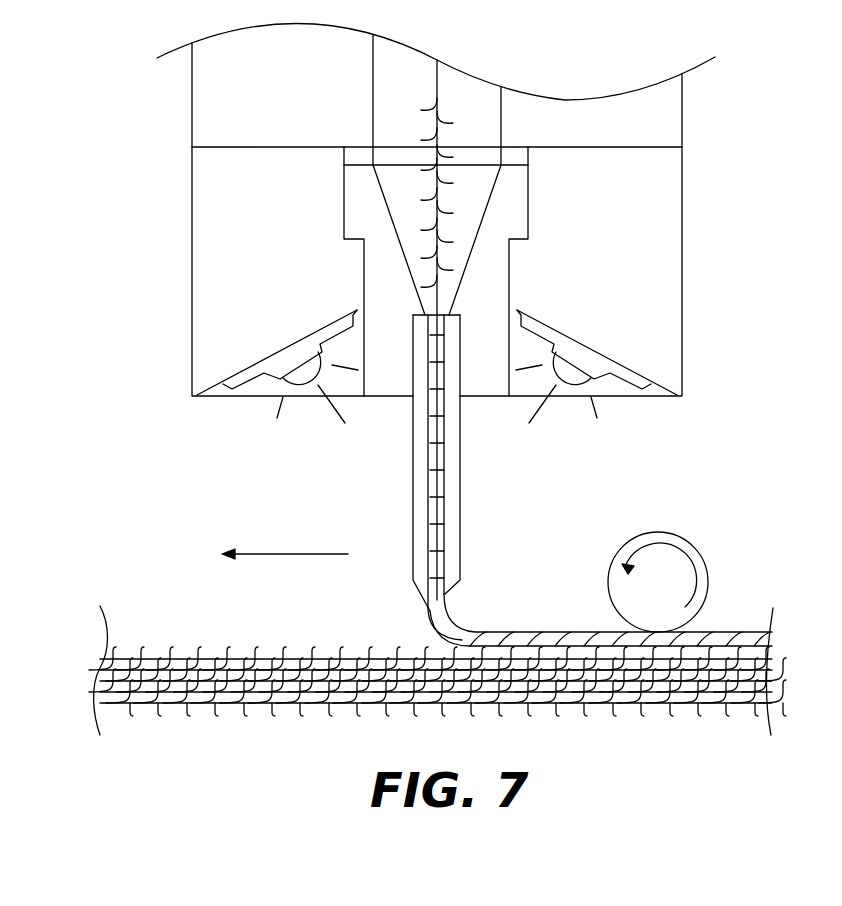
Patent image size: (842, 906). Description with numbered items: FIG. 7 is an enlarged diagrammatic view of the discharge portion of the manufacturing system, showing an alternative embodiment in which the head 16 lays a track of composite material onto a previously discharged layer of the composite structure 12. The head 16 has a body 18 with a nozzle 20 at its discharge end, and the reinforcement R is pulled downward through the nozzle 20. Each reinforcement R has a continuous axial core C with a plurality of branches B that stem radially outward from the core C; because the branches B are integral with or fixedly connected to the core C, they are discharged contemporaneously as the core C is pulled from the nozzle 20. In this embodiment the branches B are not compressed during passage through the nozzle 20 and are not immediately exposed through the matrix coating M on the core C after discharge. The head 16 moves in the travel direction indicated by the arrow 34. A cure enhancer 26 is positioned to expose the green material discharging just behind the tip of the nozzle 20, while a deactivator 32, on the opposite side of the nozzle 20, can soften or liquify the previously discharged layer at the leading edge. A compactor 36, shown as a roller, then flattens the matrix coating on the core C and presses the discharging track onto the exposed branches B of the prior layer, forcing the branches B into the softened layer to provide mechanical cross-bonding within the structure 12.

The composite structure 12 is at (690, 700).
The head 16 is at (484, 209).
The body 18 is at (649, 303).
The nozzle 20 is at (453, 488).
The cure enhancer 26 is at (582, 378).
The deactivator 32 is at (288, 379).
The arrow 34 is at (285, 553).
The compactor 36 is at (667, 594).
The reinforcement R is at (433, 108).
The core C is at (440, 110).
The branches B is at (441, 128).
The matrix M is at (448, 630).